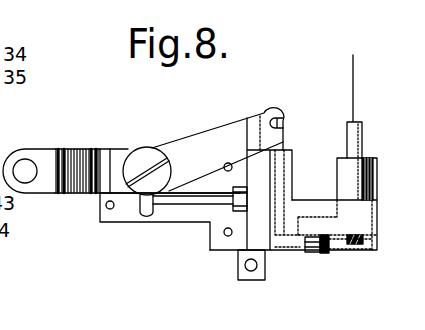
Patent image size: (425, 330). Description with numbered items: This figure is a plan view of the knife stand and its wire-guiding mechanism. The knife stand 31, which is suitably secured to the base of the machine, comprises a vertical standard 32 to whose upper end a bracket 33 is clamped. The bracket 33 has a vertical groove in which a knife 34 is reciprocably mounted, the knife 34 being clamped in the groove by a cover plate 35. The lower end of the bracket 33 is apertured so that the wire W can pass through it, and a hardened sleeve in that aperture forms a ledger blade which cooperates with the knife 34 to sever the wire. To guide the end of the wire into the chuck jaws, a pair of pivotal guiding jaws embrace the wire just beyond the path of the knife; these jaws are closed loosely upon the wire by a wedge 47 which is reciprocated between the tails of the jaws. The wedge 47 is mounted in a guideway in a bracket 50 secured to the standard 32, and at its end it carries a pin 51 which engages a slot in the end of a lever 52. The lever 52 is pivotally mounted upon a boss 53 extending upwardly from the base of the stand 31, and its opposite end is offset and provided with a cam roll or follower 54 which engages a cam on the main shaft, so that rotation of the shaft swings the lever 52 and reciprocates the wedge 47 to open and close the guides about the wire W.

The knife stand 31 is at (177, 212).
The vertical standard 32 is at (252, 223).
The bracket 33 is at (308, 202).
The knife 34 is at (352, 246).
The cover plate 35 is at (372, 251).
The wedge 47 is at (258, 142).
The bracket 50 is at (287, 163).
The pin 51 is at (285, 119).
The lever 52 is at (218, 130).
The boss 53 is at (142, 152).
The cam roll 54 is at (27, 164).
The wire W is at (352, 70).